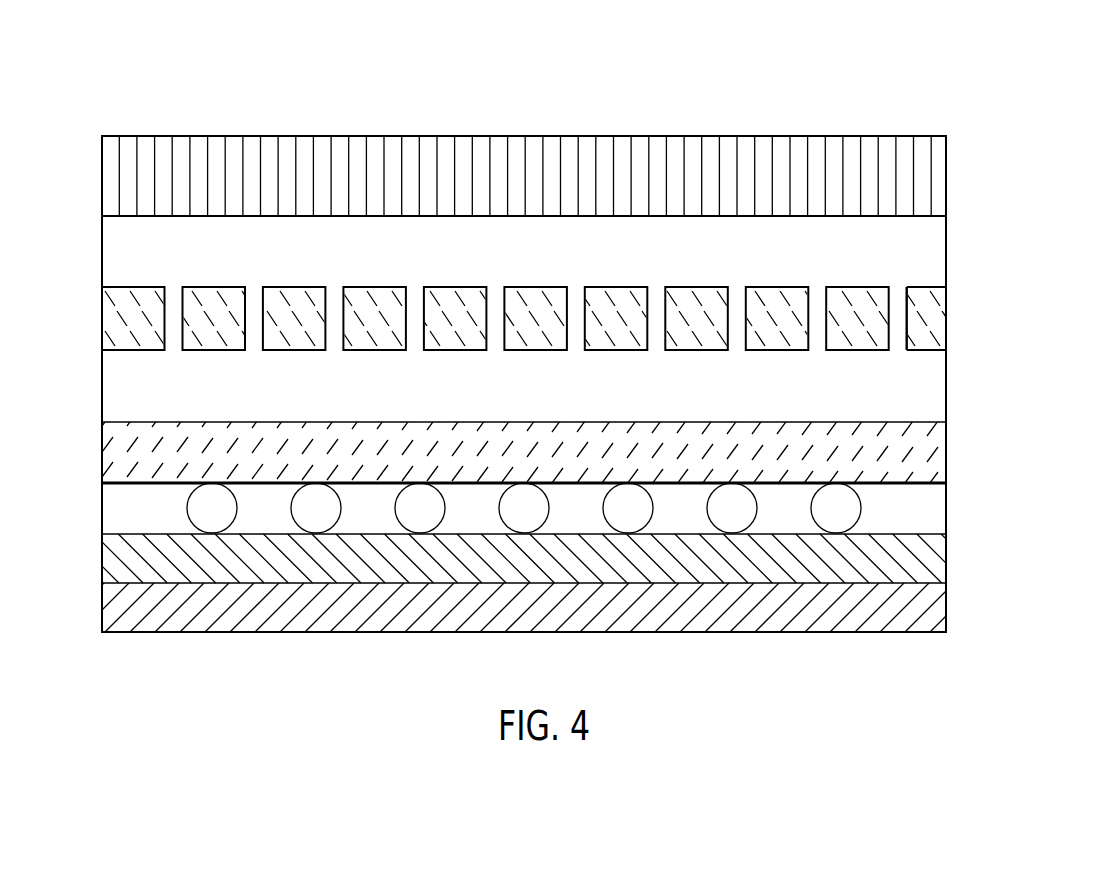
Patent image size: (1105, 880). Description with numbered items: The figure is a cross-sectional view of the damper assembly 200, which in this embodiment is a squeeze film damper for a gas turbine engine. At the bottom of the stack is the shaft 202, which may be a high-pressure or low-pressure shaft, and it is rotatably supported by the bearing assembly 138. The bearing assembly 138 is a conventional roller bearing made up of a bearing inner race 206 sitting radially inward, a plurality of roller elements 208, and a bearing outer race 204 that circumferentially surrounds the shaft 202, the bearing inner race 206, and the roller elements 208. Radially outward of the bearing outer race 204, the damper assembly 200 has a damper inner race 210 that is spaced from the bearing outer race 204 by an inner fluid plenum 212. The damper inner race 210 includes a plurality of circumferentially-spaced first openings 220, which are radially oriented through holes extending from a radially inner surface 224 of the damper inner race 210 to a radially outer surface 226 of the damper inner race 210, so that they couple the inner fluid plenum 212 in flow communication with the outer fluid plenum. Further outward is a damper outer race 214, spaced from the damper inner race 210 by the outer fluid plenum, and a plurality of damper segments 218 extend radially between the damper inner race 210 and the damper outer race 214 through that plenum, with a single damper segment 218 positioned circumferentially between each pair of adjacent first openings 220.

The damper assembly 200 is at (148, 70).
The damper outer race 214 is at (917, 179).
The damper segments 218 is at (917, 259).
The damper inner race 210 is at (917, 305).
The first openings 220 is at (907, 336).
The radially outer surface 226 is at (122, 287).
The radially inner surface 224 is at (122, 350).
The inner fluid plenum 212 is at (915, 398).
The bearing outer race 204 is at (917, 458).
The roller elements 208 is at (917, 512).
The bearing inner race 206 is at (913, 561).
The shaft 202 is at (917, 609).
The bearing assembly 138 is at (1025, 430).